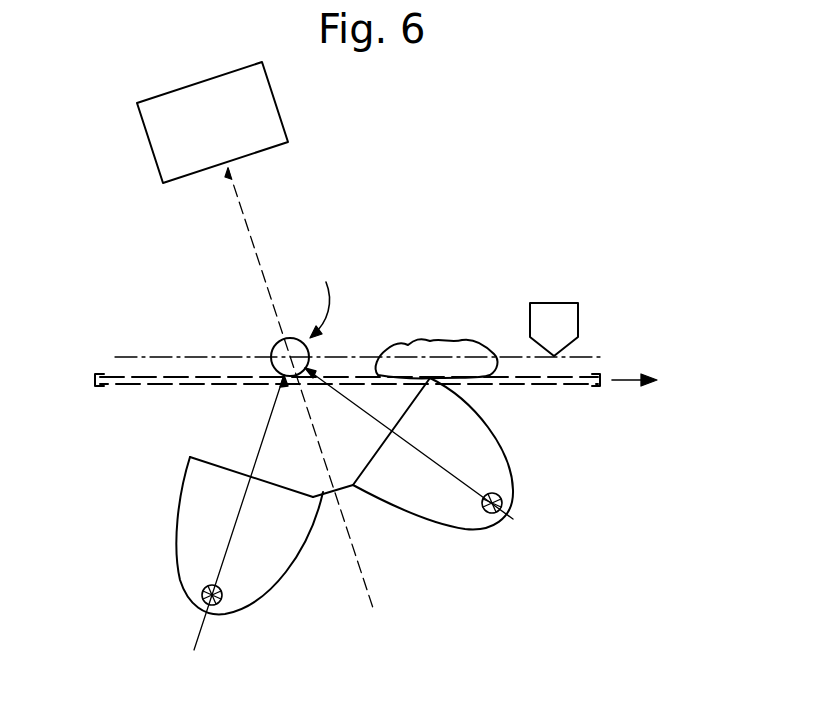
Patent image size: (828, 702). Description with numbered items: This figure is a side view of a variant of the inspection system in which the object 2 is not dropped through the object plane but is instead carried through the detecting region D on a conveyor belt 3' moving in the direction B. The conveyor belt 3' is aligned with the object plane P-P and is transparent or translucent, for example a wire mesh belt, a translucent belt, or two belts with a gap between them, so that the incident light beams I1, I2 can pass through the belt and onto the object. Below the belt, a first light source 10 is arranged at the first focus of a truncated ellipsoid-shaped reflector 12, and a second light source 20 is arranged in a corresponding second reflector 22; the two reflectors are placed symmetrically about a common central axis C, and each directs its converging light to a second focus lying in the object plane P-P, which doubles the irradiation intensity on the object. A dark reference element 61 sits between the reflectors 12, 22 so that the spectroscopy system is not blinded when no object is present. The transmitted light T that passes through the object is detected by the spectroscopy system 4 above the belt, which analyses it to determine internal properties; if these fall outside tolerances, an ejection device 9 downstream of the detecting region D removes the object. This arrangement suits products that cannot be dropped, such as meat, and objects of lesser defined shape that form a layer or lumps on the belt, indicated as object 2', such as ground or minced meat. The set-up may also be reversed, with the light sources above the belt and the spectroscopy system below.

The spectroscopy system 4 is at (180, 135).
The object 2 is at (268, 333).
The object forming a layer or lumps 2' is at (437, 323).
The conveyor belt 3' is at (333, 417).
The ejection device 9 is at (560, 317).
The light source 10 is at (202, 594).
The reflector 12 is at (176, 530).
The second light source 20 is at (502, 497).
The second reflector 22 is at (503, 453).
The dark reference element 61 is at (327, 497).
The transmitted light T is at (247, 235).
The common central axis C is at (376, 627).
The detecting region D is at (320, 295).
The object plane P is at (359, 343).
The direction of conveyor belt movement B is at (644, 382).
The incident light beam I1 is at (263, 437).
The second incident light beam I2 is at (350, 403).